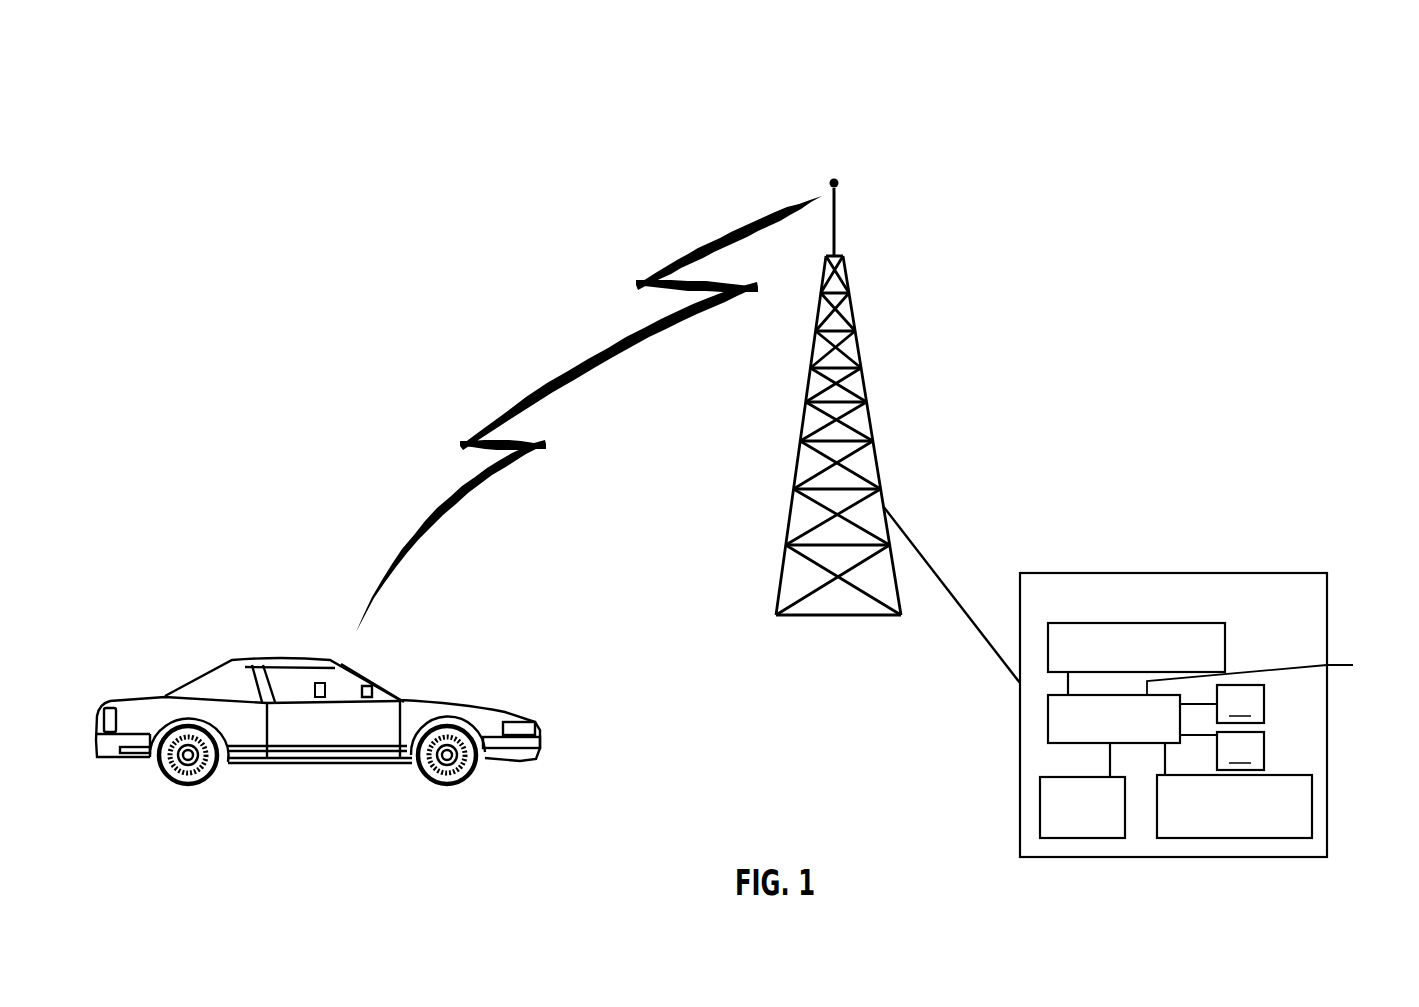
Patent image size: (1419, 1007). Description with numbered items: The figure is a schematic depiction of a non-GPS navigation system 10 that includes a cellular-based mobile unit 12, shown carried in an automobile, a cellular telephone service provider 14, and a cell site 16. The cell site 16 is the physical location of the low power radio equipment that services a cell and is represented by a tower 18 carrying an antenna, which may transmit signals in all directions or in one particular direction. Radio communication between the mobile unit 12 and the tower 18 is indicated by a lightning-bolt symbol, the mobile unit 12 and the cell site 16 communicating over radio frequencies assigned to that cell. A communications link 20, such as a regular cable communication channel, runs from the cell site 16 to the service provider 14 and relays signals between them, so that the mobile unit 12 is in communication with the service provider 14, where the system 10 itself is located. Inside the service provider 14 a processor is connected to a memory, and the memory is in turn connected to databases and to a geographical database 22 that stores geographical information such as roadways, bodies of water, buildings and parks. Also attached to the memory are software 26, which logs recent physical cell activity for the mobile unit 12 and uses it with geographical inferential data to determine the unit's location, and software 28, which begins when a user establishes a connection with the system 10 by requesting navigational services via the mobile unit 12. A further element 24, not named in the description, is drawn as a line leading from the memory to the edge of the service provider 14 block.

The non-GPS navigation system 10 is at (352, 366).
The cellular-based mobile unit 12 is at (327, 682).
The cellular telephone service provider 14 is at (1216, 740).
The cell site 16 is at (892, 162).
The tower 18 is at (857, 323).
The communications link 20 is at (940, 570).
The geographical database 22 is at (1235, 838).
The connection line 24 is at (1266, 671).
The software 26 is at (1240, 704).
The software 28 is at (1240, 751).